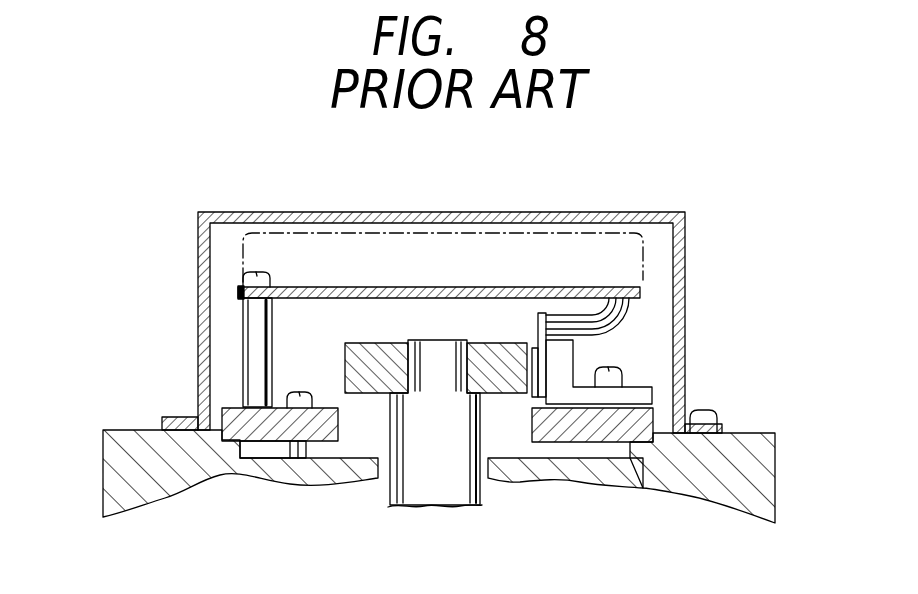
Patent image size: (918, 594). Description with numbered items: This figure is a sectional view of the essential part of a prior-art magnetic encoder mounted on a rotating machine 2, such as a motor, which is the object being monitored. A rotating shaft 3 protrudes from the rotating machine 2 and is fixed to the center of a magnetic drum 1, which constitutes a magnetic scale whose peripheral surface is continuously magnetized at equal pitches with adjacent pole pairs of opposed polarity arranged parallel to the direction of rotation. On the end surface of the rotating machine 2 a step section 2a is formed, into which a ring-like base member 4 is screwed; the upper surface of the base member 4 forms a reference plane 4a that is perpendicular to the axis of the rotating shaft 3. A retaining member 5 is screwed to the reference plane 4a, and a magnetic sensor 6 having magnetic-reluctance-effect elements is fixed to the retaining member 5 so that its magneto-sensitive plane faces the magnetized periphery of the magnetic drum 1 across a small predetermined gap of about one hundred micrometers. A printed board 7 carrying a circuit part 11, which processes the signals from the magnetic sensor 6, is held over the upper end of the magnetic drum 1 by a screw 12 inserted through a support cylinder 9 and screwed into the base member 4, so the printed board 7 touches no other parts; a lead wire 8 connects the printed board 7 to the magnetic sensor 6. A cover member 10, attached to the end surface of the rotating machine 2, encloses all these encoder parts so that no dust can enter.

The magnetic drum 1 is at (498, 352).
The rotating machine 2 is at (750, 440).
The step section 2a is at (645, 470).
The rotating shaft 3 is at (436, 490).
The base member 4 is at (232, 407).
The reference plane 4a is at (583, 445).
The retaining member 5 is at (652, 390).
The magnetic sensor 6 is at (533, 402).
The printed board 7 is at (238, 293).
The lead wire 8 is at (615, 323).
The support cylinder 9 is at (243, 340).
The cover member 10 is at (432, 215).
The circuit part 11 is at (327, 235).
The screw 12 is at (243, 279).